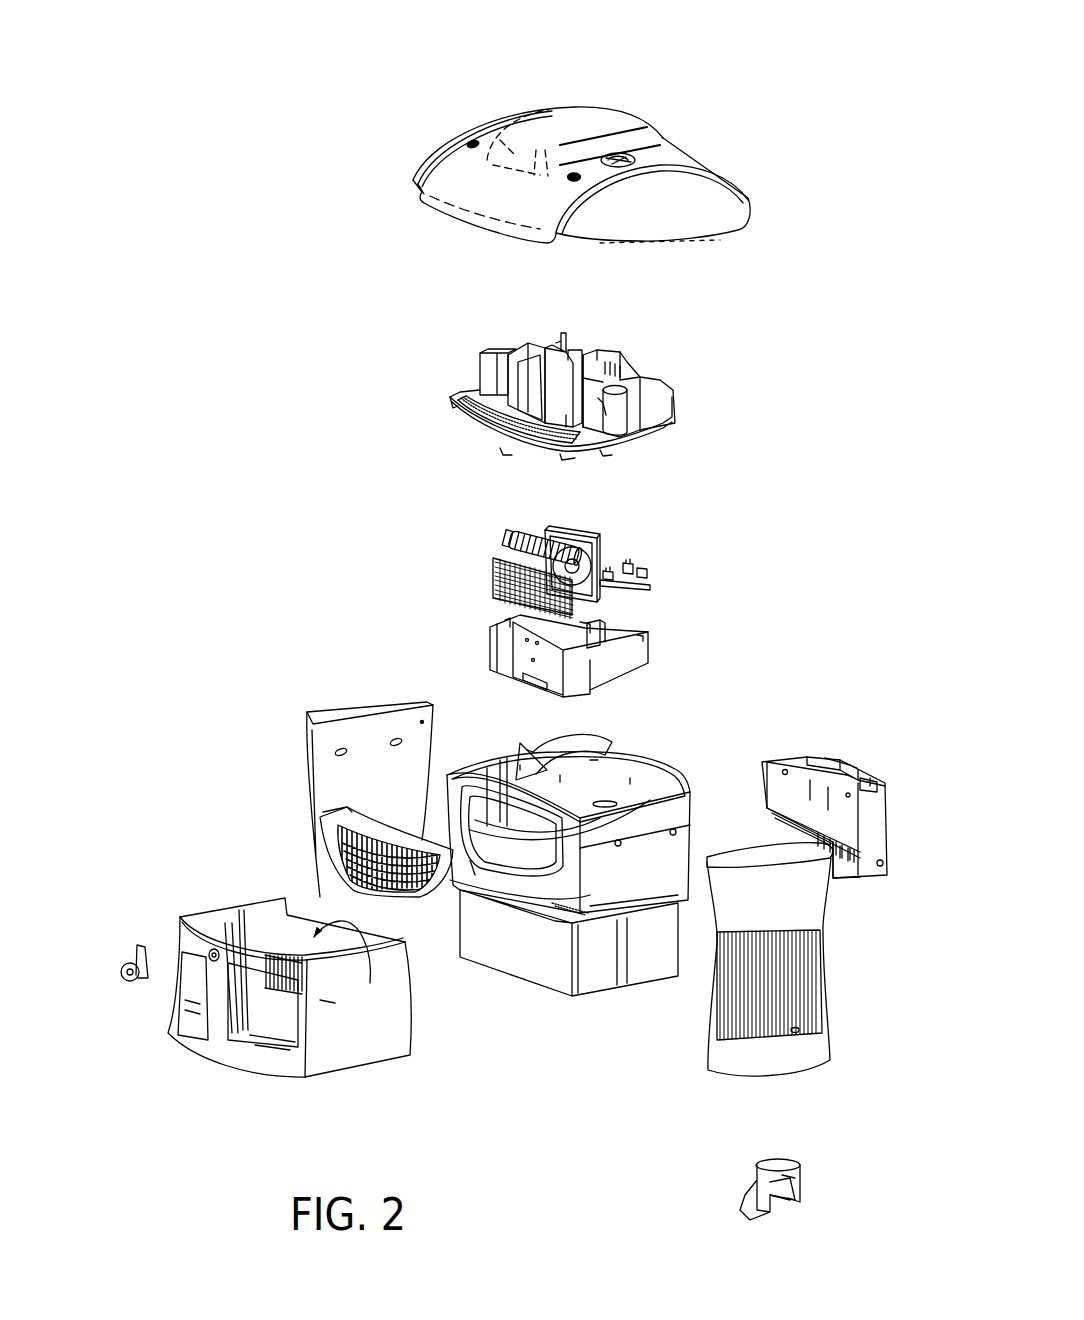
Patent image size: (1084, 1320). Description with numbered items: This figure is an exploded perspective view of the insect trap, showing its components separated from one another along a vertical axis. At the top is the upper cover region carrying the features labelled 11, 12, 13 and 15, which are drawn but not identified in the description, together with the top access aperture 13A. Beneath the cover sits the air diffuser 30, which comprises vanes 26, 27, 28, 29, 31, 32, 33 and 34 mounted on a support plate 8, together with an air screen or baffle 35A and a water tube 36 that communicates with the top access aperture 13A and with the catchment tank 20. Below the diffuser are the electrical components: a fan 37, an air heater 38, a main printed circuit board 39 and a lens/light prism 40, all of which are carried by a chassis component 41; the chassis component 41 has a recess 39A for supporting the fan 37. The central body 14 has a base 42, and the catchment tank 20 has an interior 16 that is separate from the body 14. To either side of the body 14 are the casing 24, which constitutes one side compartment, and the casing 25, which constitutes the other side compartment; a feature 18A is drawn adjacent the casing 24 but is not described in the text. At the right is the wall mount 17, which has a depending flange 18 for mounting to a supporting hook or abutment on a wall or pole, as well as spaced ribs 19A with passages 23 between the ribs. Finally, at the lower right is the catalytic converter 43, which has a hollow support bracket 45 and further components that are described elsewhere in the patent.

The support plate 8 is at (529, 435).
The electronic air freshener apparatus 11 is at (545, 137).
The buttons 12 is at (472, 141).
The display window 13 is at (540, 163).
The top access aperture 13A is at (635, 158).
The body 14 is at (596, 878).
The top cover 15 is at (618, 122).
The interior 16 is at (349, 969).
The wall mount 17 is at (837, 747).
The depending flange 18 is at (347, 862).
The filter edge 18A is at (320, 809).
The spaced ribs 19A is at (850, 770).
The catchment tank 20 is at (266, 1022).
The passages 23 is at (872, 777).
The casing 24 is at (551, 794).
The casing 25 is at (813, 900).
The vane 26 is at (653, 393).
The vane 27 is at (600, 403).
The vane 28 is at (575, 357).
The vane 29 is at (557, 347).
The air diffuser 30 is at (533, 531).
The vane 31 is at (533, 382).
The vane 32 is at (513, 370).
The vane 33 is at (503, 383).
The vane 34 is at (493, 358).
The air screen or baffle 35A is at (470, 413).
The water tube 36 is at (623, 397).
The fan 37 is at (586, 526).
The air heater 38 is at (492, 580).
The main printed circuit board 39 is at (652, 579).
The recess 39A is at (597, 622).
The lens/light prism 40 is at (503, 539).
The chassis component 41 is at (569, 638).
The base 42 is at (553, 925).
The catalytic converter 43 is at (760, 1185).
The hollow support bracket 45 is at (797, 1177).